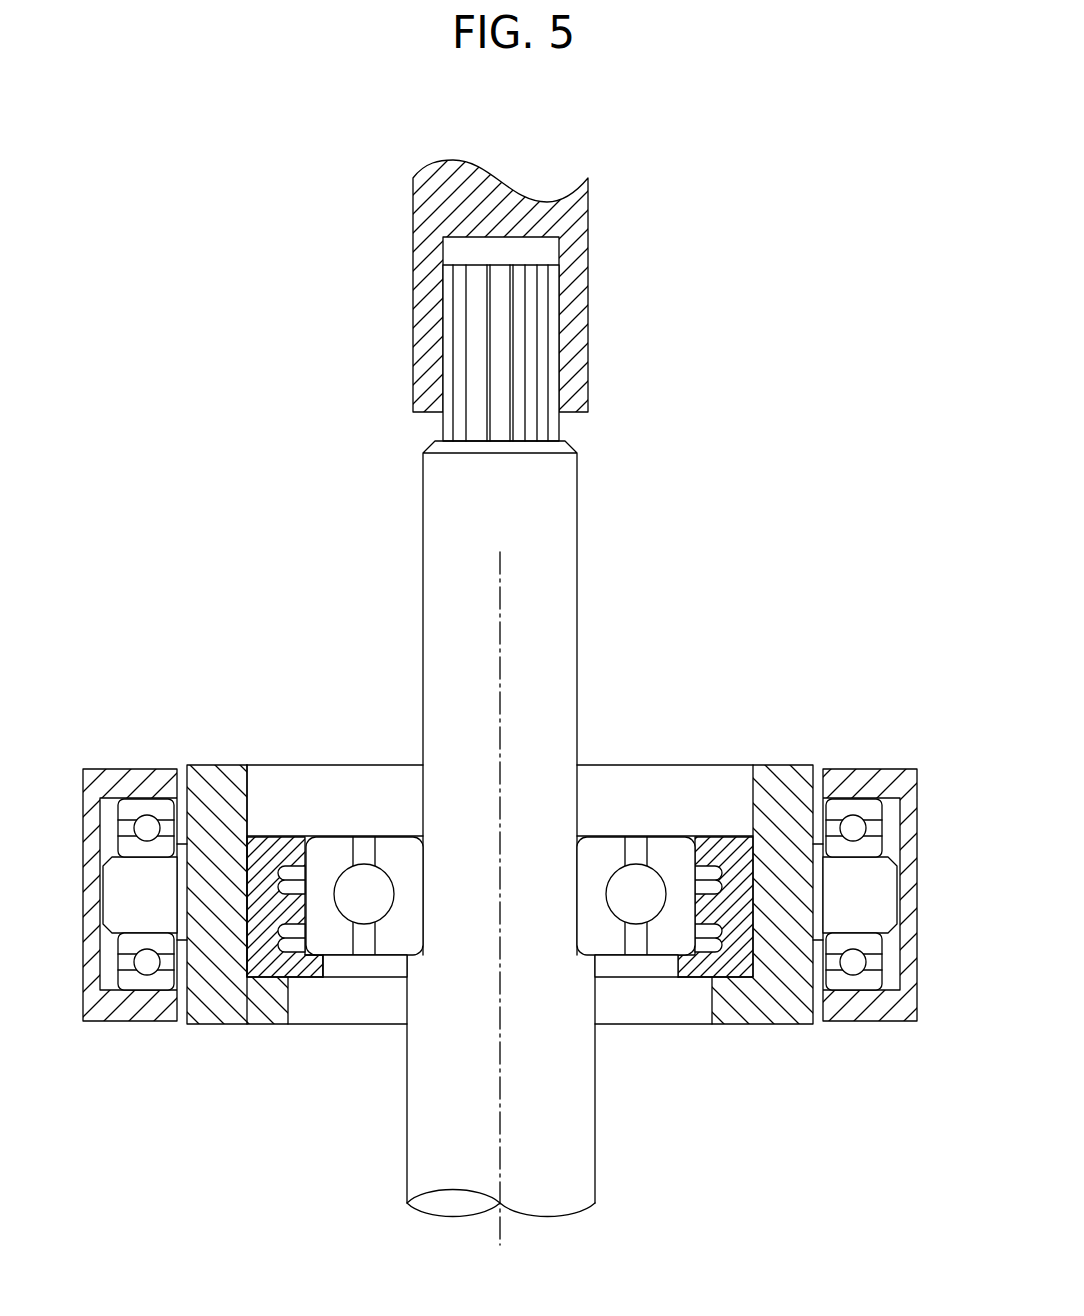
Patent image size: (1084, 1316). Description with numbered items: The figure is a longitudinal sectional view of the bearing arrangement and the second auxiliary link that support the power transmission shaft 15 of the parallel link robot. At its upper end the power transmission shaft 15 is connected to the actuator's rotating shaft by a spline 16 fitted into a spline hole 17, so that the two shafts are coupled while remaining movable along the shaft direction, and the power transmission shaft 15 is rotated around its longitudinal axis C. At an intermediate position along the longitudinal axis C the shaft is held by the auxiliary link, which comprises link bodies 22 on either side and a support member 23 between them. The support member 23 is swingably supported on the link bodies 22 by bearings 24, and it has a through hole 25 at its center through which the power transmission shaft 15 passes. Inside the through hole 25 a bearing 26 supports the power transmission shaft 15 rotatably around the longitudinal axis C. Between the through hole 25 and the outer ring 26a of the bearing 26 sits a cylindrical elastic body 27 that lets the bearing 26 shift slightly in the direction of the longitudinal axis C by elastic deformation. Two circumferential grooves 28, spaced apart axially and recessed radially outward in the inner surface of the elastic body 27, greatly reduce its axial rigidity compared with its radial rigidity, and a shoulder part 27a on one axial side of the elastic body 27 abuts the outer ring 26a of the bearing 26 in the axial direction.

The power transmission shaft 15 is at (423, 566).
The spline 16 is at (565, 322).
The spline hole 17 is at (442, 330).
The link body 22 is at (83, 804).
The support member 23 is at (777, 765).
The bearing 24 is at (117, 963).
The through hole 25 is at (247, 787).
The bearing 26 is at (380, 955).
The outer ring 26a is at (300, 962).
The cylindrical elastic body 27 is at (282, 837).
The shoulder part 27a is at (678, 962).
The circumferential groove 28 is at (300, 882).
The longitudinal axis C is at (500, 1158).